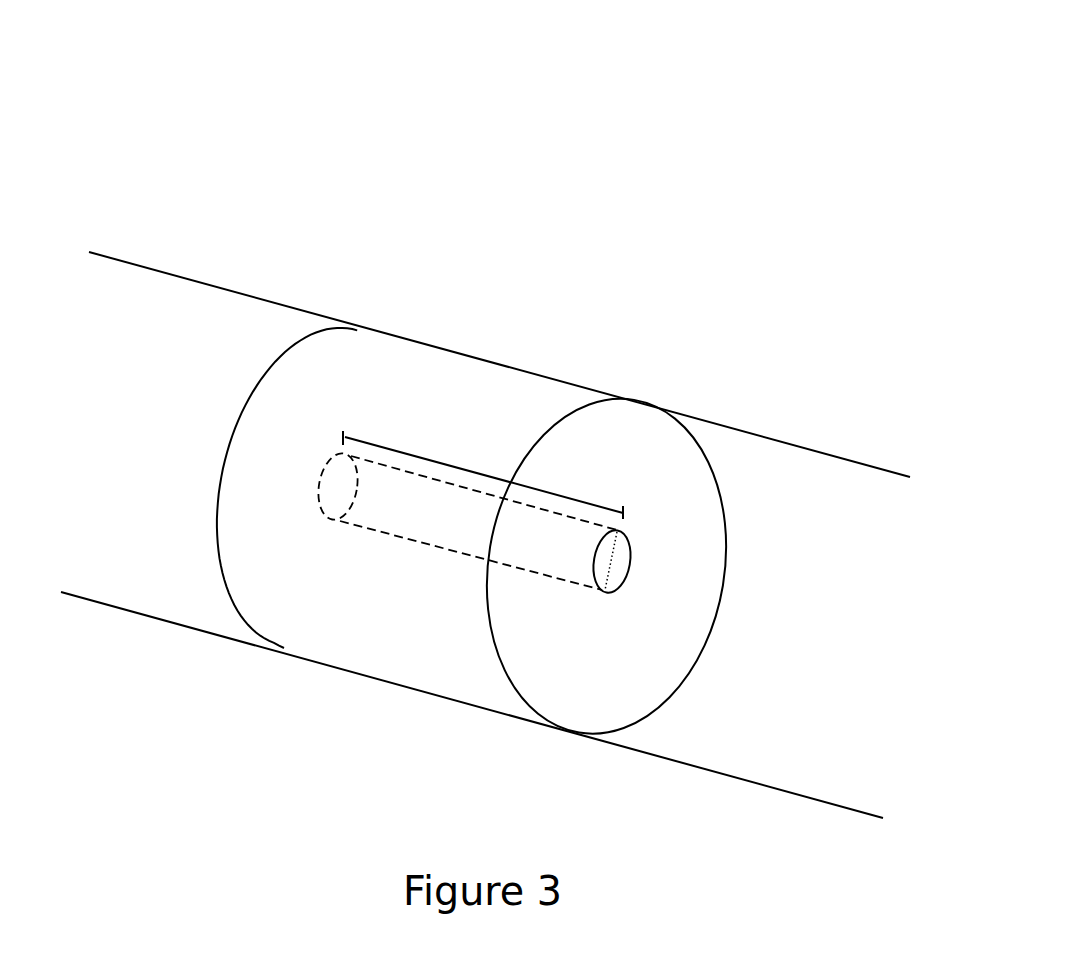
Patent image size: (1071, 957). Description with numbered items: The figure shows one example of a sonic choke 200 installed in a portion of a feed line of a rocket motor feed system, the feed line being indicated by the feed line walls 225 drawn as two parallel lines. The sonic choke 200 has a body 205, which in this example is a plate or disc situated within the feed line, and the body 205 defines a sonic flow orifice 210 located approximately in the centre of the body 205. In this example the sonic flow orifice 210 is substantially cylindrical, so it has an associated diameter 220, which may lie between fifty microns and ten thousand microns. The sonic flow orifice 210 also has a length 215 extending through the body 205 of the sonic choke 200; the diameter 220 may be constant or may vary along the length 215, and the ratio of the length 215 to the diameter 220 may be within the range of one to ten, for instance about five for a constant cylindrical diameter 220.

The sonic choke 200 is at (645, 138).
The body 205 is at (641, 475).
The sonic flow orifice 210 is at (635, 548).
The length 215 is at (432, 455).
The diameter 220 is at (613, 568).
The feed line walls 225 is at (96, 593).